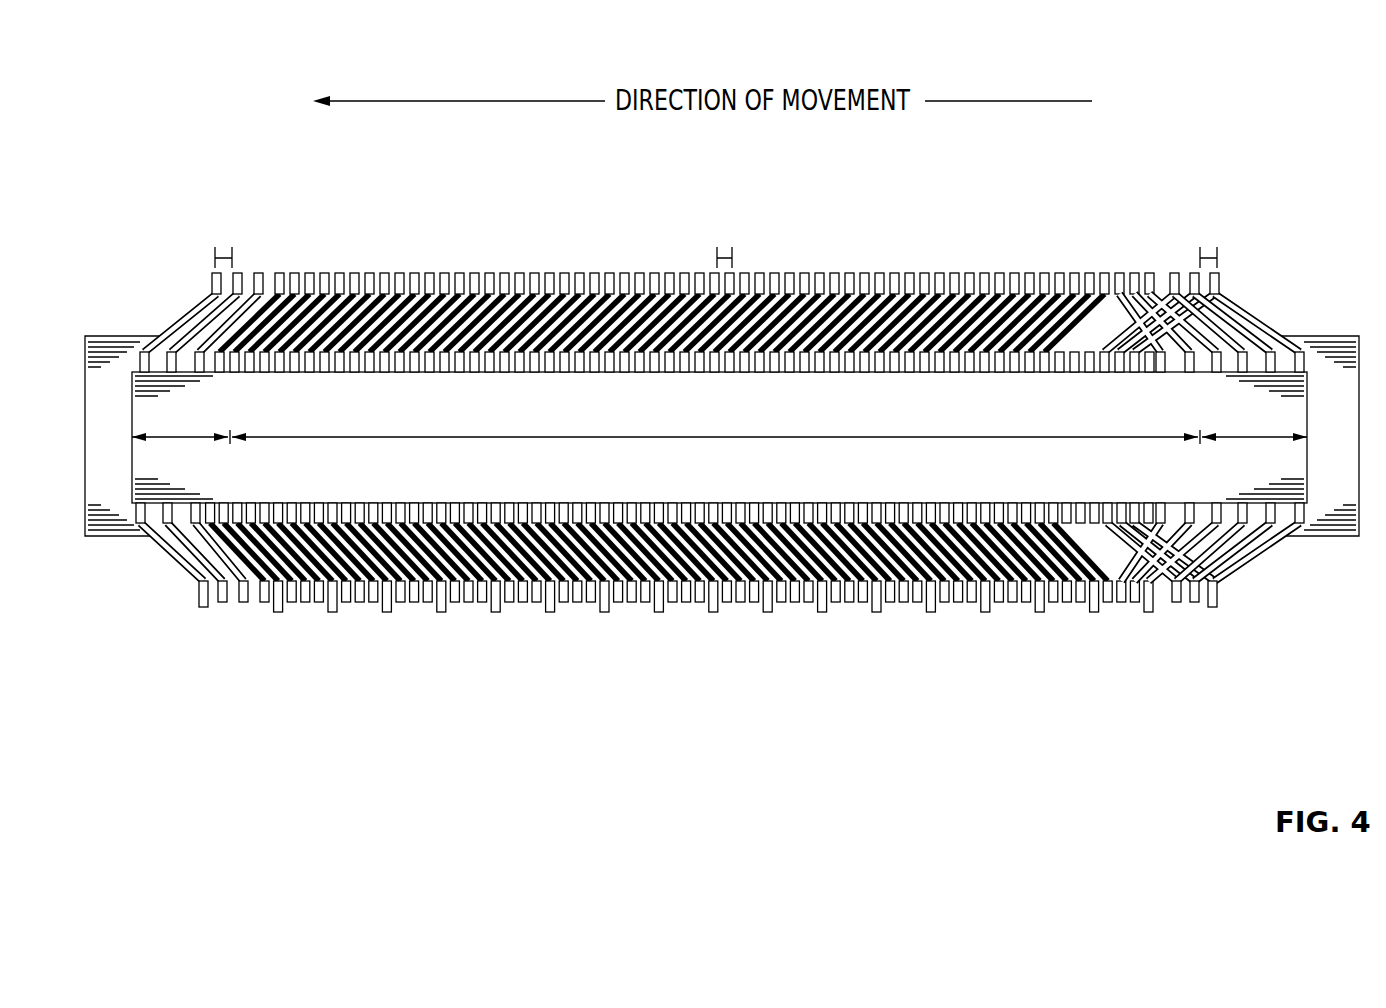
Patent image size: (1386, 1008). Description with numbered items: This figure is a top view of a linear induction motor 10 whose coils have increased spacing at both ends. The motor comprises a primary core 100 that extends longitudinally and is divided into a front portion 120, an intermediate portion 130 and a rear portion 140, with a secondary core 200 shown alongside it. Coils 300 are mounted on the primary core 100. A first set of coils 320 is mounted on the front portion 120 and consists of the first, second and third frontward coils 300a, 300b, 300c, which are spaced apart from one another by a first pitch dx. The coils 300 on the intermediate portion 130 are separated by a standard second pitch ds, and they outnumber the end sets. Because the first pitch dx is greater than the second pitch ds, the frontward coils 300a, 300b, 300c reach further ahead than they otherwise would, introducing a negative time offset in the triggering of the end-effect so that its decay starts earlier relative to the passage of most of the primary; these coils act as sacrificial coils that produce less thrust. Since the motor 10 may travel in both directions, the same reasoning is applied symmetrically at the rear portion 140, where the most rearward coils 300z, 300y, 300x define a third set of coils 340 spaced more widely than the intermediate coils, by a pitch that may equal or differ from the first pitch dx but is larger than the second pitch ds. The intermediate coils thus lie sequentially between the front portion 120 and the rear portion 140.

The linear induction motor 10 is at (734, 442).
The primary core 100 is at (908, 419).
The secondary core 200 is at (96, 336).
The coils 300 is at (734, 447).
The first set of coils 320 is at (285, 213).
The third set of coils 340 is at (1148, 213).
The front portion 120 is at (222, 437).
The intermediate portion 130 is at (860, 437).
The rear portion 140 is at (1218, 440).
The first frontward coil 300a is at (203, 602).
The second frontward coil 300b is at (222, 602).
The third frontward coil 300c is at (243, 602).
The rearward coil 300x is at (1176, 602).
The rearward coil 300y is at (1194, 602).
The most rearward coil 300z is at (1217, 602).
The first pitch dx is at (1212, 258).
The second pitch ds is at (647, 213).